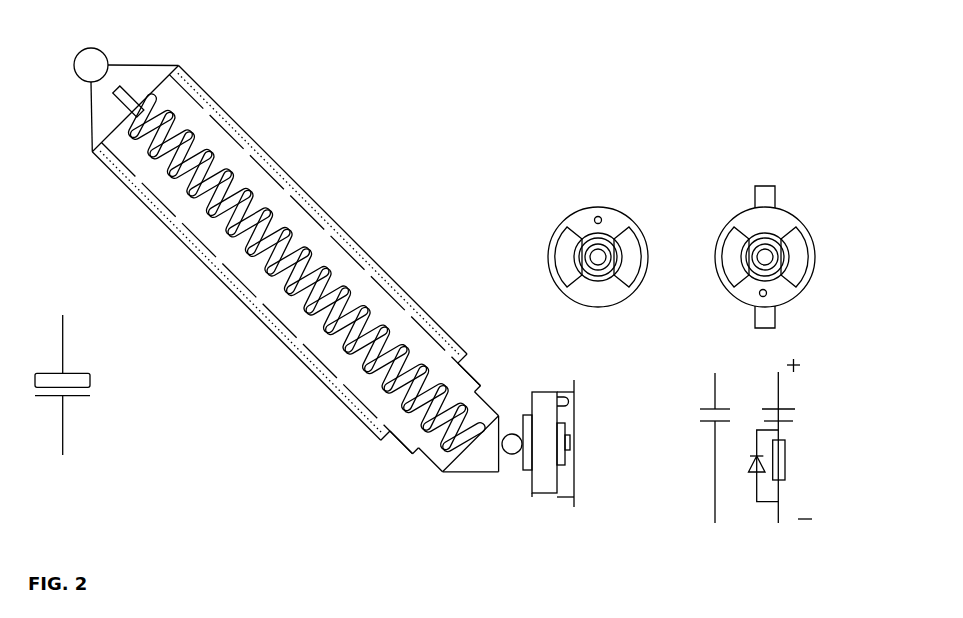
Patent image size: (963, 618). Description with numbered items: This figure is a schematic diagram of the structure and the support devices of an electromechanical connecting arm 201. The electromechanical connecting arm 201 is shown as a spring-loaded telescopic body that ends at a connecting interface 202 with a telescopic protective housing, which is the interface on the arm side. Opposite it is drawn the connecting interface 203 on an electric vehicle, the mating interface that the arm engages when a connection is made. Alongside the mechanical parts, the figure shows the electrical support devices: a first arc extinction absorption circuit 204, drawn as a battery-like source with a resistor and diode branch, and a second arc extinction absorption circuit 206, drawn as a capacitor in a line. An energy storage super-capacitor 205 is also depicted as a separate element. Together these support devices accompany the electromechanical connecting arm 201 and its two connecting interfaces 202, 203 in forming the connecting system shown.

The electromechanical connecting arm 201 is at (335, 200).
The connecting interface with a telescopic protective housing 202 is at (549, 262).
The connecting interface on an electric vehicle 203 is at (800, 212).
The first arc extinction absorption circuit 204 is at (800, 452).
The energy storage super-capacitor 205 is at (83, 412).
The second arc extinction absorption circuit 206 is at (698, 447).